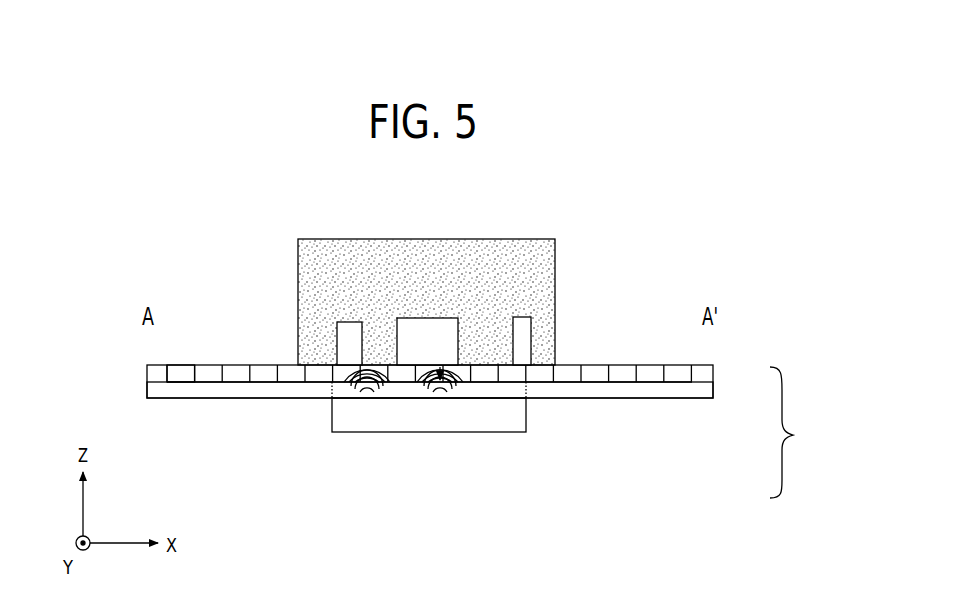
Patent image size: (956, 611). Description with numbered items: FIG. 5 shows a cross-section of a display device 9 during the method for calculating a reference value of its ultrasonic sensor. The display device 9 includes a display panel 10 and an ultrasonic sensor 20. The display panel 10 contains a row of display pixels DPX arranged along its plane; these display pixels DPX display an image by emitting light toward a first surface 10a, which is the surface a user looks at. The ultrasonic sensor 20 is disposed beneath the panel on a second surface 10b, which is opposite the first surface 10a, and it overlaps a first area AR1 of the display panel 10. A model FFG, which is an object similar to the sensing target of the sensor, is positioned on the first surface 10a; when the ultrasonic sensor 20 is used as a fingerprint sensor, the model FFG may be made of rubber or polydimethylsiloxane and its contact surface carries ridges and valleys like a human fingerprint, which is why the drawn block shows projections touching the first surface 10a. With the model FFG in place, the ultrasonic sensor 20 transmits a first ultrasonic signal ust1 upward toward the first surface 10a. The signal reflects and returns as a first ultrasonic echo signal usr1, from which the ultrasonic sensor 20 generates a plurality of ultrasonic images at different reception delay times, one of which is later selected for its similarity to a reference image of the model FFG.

The model FFG is at (502, 239).
The display panel 10 is at (714, 383).
The first surface 10a is at (578, 365).
The second surface 10b is at (601, 398).
The display pixel DPX is at (167, 373).
The ultrasonic sensor 20 is at (526, 420).
The first area AR1 is at (343, 399).
The first ultrasonic signal ust1 is at (367, 400).
The first ultrasonic echo signal usr1 is at (463, 400).
The display device 9 is at (790, 432).